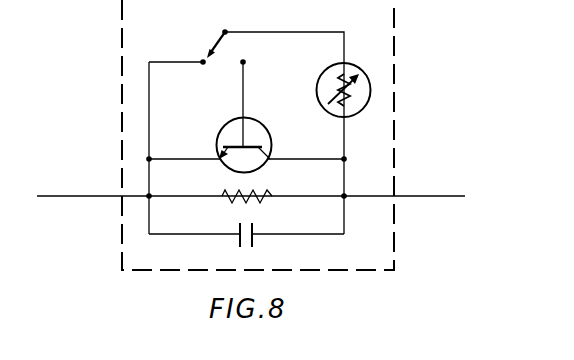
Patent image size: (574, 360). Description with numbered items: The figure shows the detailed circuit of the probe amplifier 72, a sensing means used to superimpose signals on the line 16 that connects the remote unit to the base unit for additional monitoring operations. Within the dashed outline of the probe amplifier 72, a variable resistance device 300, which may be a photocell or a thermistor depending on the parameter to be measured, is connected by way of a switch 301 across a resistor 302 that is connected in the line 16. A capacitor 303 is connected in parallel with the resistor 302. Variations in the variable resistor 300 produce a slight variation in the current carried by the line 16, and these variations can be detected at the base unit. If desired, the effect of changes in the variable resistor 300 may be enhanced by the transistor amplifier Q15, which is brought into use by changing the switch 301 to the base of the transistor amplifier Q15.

The probe amplifier 72 is at (121, 52).
The line 16 is at (72, 195).
The variable resistance device 300 is at (320, 78).
The switch 301 is at (213, 47).
The resistor 302 is at (222, 196).
The capacitor 303 is at (239, 232).
The transistor amplifier Q15 is at (229, 115).